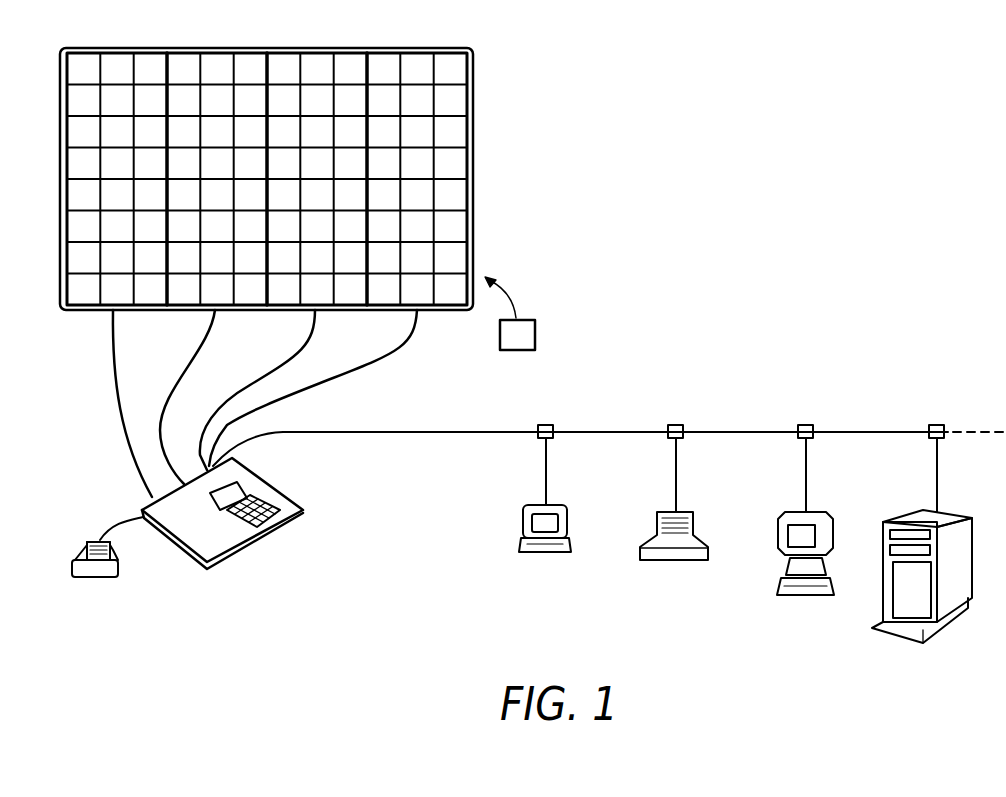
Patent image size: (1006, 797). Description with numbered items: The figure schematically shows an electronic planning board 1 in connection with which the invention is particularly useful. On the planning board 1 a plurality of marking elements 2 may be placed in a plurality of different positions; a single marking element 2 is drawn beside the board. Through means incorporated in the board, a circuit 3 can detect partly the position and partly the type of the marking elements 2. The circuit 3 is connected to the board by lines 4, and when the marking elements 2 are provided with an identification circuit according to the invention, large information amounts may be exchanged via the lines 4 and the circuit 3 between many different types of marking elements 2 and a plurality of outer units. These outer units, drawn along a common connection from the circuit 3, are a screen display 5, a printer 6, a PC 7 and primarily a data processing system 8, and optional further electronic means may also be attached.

The planning board 1 is at (490, 173).
The marking elements 2 is at (525, 333).
The circuit 3 is at (257, 533).
The lines 4 is at (112, 387).
The screen display 5 is at (543, 553).
The printer 6 is at (677, 563).
The PC 7 is at (787, 515).
The data processing system 8 is at (905, 513).